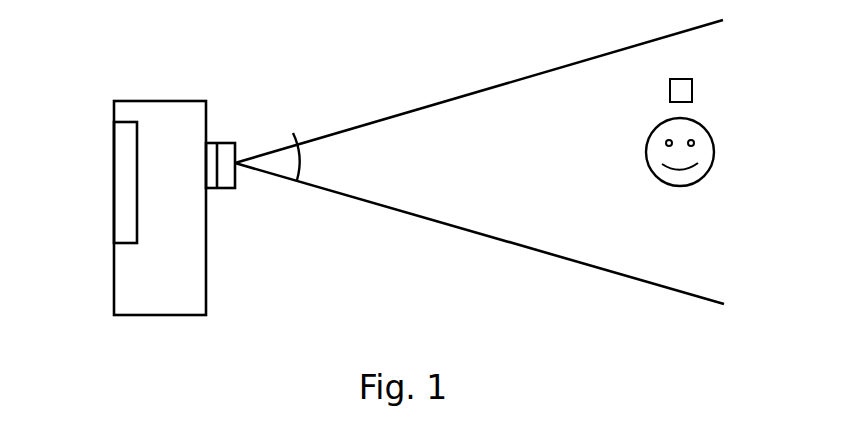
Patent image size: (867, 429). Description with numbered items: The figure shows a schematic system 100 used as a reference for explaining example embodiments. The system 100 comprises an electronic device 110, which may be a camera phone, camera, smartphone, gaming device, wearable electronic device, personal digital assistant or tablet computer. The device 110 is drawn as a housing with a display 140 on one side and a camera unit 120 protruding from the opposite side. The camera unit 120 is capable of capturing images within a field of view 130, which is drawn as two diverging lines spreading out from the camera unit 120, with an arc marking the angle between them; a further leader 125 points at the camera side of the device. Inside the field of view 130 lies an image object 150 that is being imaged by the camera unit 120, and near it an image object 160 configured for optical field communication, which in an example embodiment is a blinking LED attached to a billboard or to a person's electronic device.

The system 100 is at (152, 69).
The electronic device 110 is at (206, 255).
The camera unit 120 is at (212, 189).
The projection beam 125 is at (238, 145).
The field of view 130 is at (298, 141).
The display 140 is at (113, 146).
The image object 150 is at (717, 158).
The image object configured for optical field communication 160 is at (692, 81).